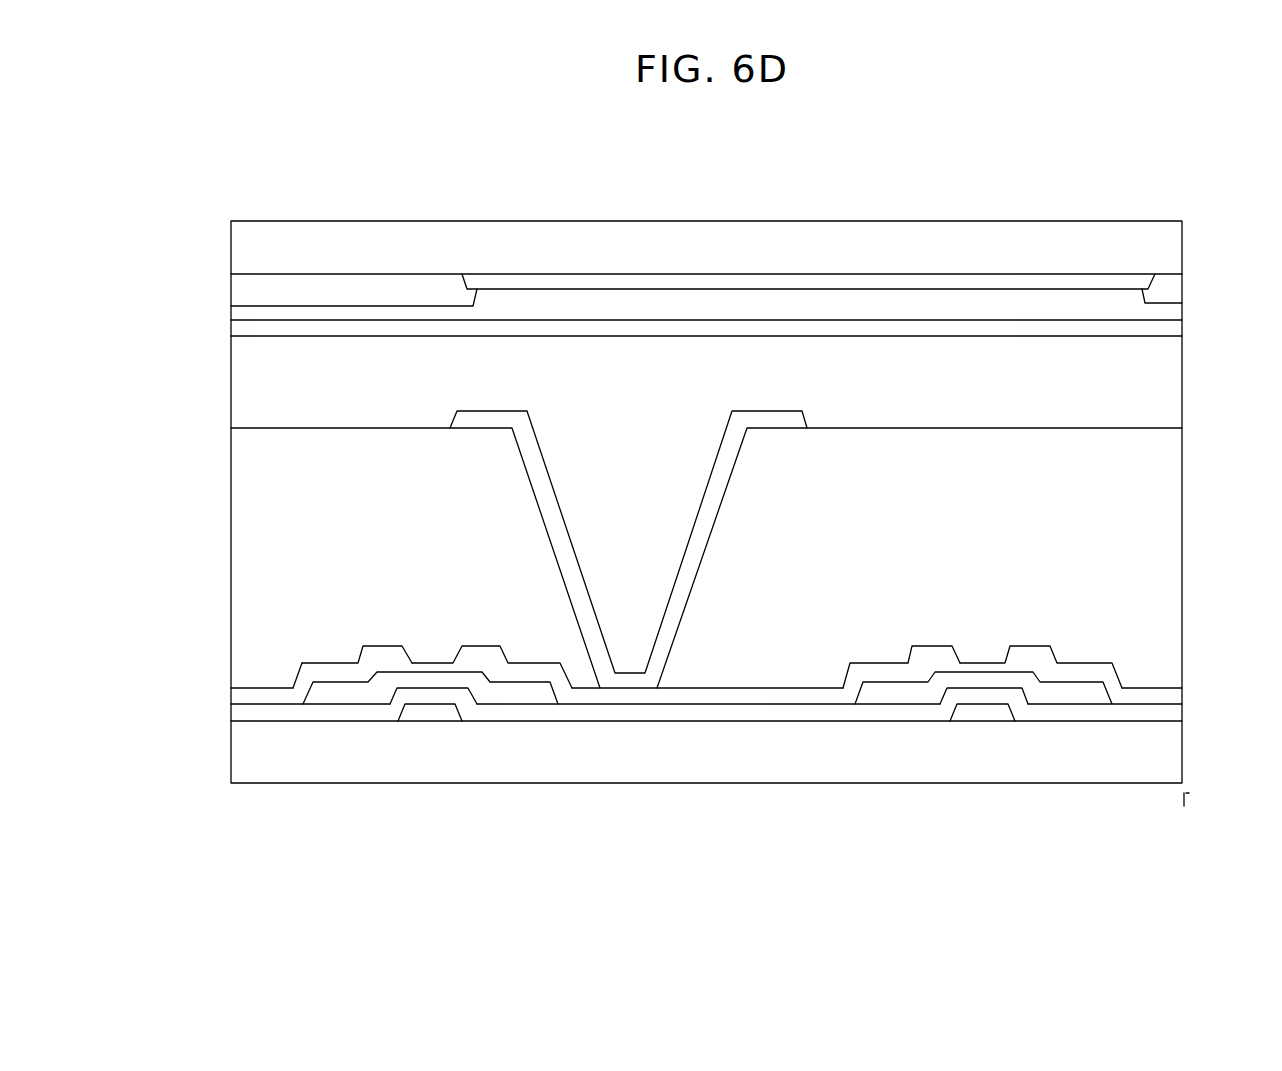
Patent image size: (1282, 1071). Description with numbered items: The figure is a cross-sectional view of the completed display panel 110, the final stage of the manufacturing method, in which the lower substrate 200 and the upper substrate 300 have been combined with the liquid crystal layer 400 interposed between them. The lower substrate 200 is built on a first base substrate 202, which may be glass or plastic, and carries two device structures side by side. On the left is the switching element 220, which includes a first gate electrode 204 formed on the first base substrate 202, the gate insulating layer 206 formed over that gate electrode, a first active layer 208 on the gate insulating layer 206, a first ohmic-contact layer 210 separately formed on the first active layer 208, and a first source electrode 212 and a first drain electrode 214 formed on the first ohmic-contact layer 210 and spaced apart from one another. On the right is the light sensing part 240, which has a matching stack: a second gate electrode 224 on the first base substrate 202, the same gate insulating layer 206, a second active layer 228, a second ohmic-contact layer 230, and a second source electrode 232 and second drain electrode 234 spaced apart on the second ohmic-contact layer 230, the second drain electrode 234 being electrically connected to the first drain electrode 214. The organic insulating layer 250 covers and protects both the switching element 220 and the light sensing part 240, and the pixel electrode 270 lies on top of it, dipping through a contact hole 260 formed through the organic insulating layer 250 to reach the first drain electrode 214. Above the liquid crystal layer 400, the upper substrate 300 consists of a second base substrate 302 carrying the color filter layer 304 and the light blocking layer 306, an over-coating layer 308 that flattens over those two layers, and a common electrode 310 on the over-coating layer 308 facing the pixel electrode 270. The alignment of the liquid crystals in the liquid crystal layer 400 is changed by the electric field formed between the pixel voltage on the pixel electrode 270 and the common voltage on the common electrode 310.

The display panel 110 is at (1183, 200).
The lower substrate 200 is at (221, 429).
The first base substrate 202 is at (1175, 744).
The first gate electrode 204 is at (433, 710).
The gate insulating layer 206 is at (493, 710).
The first active layer 208 is at (375, 695).
The first ohmic-contact layer 210 is at (327, 684).
The first source electrode 212 is at (268, 697).
The first drain electrode 214 is at (507, 739).
The switching element 220 is at (427, 756).
The second gate electrode 224 is at (982, 712).
The second active layer 228 is at (928, 695).
The second ohmic-contact layer 230 is at (882, 692).
The second source electrode 232 is at (1057, 739).
The second drain electrode 234 is at (830, 695).
The light sensing part 240 is at (980, 756).
The organic insulating layer 250 is at (1175, 563).
The contact hole 260 is at (642, 565).
The pixel electrode 270 is at (803, 414).
The upper substrate 300 is at (221, 222).
The second base substrate 302 is at (1172, 240).
The color filter layer 304 is at (1172, 275).
The light blocking layer 306 is at (1172, 296).
The over-coating layer 308 is at (1172, 313).
The common electrode 310 is at (1173, 327).
The liquid crystal layer 400 is at (240, 378).